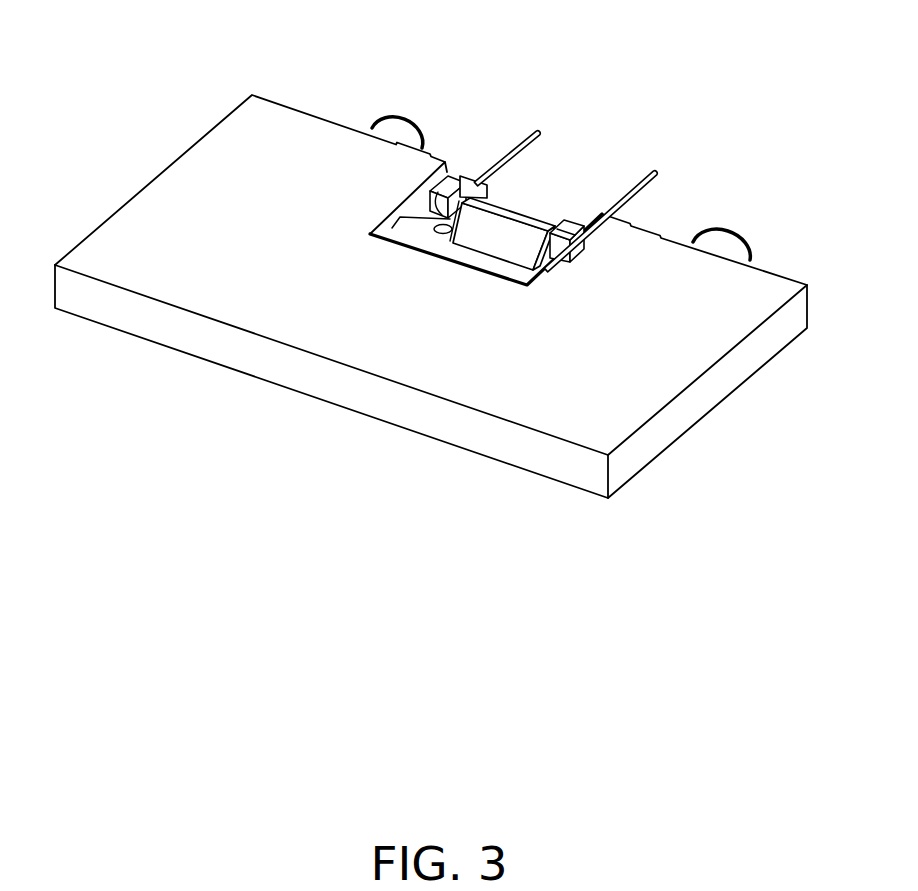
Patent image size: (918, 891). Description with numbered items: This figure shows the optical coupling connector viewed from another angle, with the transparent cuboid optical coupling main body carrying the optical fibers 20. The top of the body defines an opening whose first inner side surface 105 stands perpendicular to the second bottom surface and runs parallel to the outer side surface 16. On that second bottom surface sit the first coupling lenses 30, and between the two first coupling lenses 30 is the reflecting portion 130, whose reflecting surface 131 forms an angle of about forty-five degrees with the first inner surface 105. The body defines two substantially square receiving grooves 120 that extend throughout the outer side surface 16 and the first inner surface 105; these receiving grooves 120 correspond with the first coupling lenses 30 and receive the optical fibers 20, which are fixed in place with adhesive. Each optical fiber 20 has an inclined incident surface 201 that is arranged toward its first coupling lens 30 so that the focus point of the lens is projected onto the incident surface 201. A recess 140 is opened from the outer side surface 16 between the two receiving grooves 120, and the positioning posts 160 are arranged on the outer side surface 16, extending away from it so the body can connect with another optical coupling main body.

The outer side surface 16 is at (290, 108).
The positioning post 160 is at (393, 128).
The first coupling lens 30 is at (405, 217).
The incident surface 201 is at (442, 222).
The optical fiber 20 is at (518, 146).
The first inner side surface 105 is at (568, 212).
The recess 140 is at (531, 213).
The receiving groove 120 is at (586, 219).
The reflecting portion 130 is at (553, 268).
The reflecting surface 131 is at (507, 242).